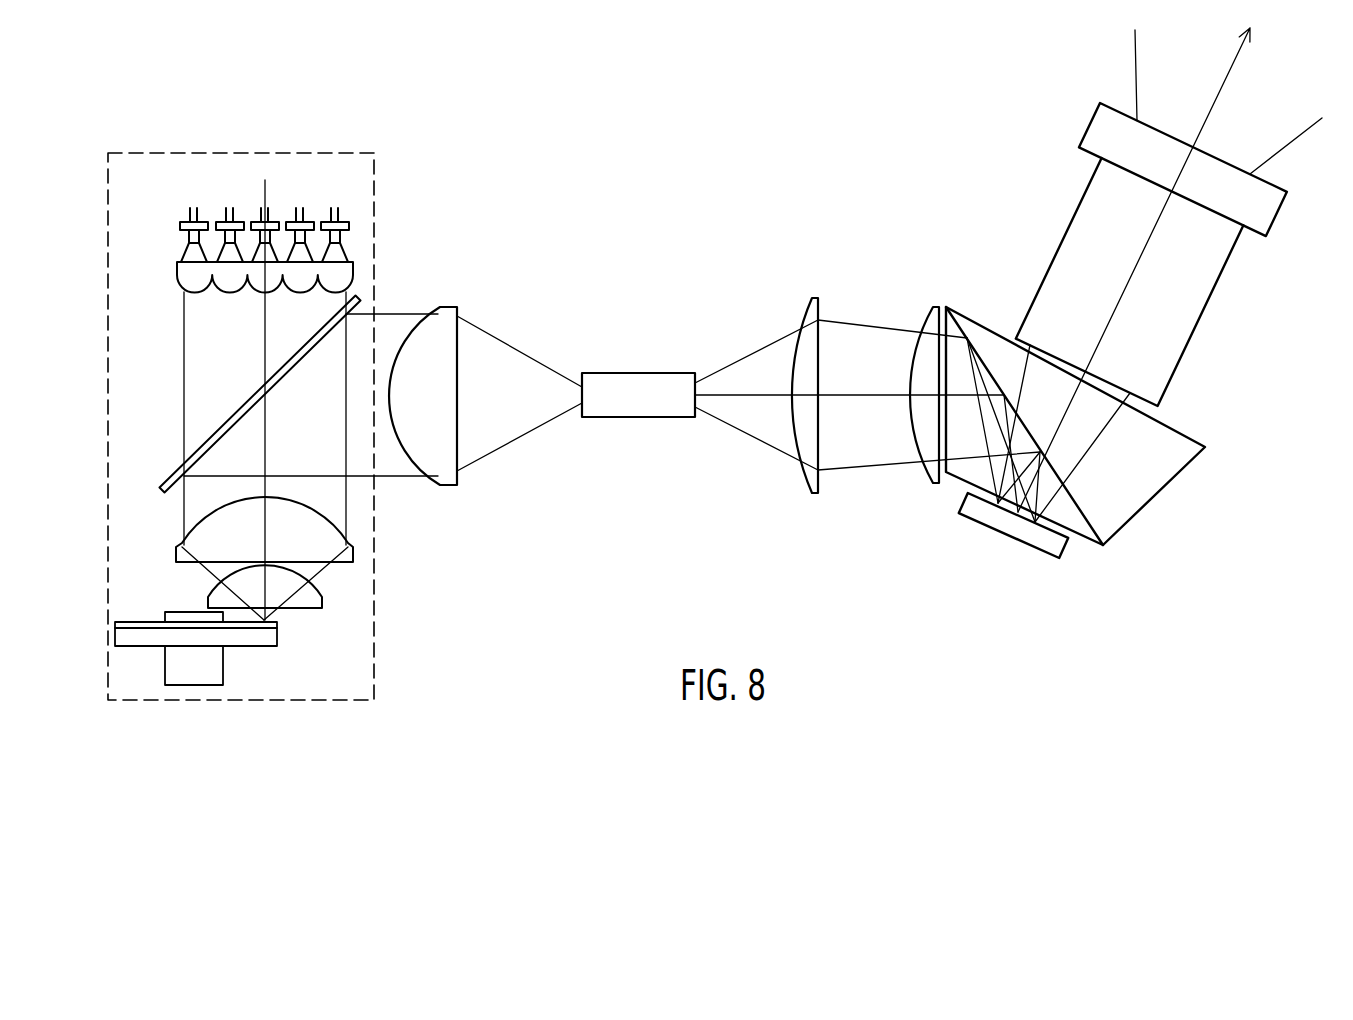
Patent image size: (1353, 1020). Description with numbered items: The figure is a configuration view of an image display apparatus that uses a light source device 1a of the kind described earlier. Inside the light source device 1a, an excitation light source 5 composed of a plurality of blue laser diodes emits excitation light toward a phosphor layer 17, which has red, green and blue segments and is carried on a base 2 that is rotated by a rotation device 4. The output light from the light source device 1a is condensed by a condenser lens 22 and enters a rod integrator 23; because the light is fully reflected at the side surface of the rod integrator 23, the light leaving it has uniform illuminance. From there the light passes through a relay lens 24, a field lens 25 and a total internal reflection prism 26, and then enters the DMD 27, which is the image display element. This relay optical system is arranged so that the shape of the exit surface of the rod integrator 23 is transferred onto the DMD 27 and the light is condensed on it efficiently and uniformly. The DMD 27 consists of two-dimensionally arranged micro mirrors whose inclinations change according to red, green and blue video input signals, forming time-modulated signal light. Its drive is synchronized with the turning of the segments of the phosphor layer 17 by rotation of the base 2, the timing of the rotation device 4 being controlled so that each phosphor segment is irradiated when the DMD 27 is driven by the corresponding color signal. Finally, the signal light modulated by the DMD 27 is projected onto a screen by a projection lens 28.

The light source device 1a is at (317, 151).
The excitation light source 5 is at (168, 237).
The phosphor layer 17 is at (277, 623).
The base 2 is at (277, 640).
The rotation device 4 is at (223, 665).
The condenser lens 22 is at (447, 307).
The rod integrator 23 is at (637, 373).
The relay lens 24 is at (813, 298).
The field lens 25 is at (935, 307).
The total internal reflection prism 26 is at (1167, 488).
The DMD 27 is at (1067, 547).
The projection lens 28 is at (1190, 308).